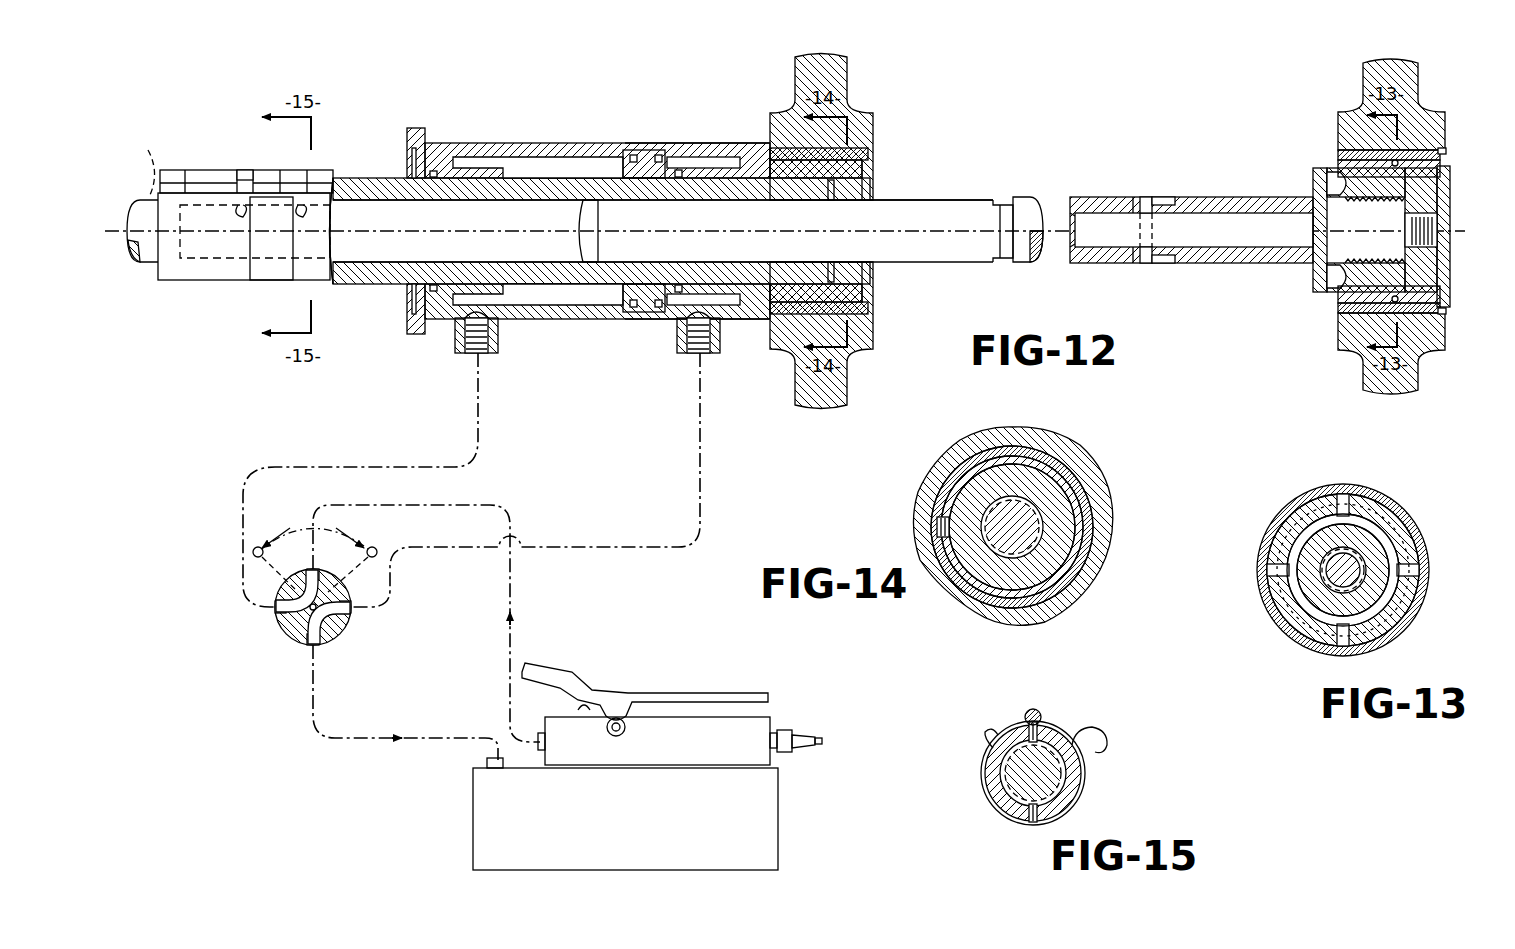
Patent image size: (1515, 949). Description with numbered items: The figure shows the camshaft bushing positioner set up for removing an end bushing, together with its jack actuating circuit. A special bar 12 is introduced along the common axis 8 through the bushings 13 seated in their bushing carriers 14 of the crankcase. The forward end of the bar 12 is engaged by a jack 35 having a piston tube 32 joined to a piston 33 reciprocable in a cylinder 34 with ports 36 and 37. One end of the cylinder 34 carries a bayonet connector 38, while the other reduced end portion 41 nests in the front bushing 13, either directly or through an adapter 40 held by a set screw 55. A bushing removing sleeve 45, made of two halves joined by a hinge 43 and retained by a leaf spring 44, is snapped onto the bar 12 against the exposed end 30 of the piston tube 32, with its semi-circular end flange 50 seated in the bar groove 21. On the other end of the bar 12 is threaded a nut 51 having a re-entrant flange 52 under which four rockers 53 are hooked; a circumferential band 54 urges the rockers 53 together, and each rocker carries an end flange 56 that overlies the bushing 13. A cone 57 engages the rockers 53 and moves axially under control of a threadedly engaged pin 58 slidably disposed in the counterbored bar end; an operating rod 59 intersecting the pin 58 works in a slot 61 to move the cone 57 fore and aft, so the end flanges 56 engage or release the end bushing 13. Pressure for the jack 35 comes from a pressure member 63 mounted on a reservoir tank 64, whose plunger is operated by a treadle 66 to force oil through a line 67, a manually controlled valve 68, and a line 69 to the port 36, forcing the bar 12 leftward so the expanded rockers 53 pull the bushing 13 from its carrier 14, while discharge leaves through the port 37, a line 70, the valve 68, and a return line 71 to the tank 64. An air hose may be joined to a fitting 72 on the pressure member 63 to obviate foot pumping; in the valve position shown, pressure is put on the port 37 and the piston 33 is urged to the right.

In FIG. 12, the common axis 8 is at (946, 222).
In FIG. 12, the bar 12 is at (918, 262).
In FIG. 14, the bar 12 is at (1050, 538).
In FIG. 13, the bar 12 is at (1310, 564).
In FIG. 15, the bar 12 is at (1010, 785).
In FIG. 12, the bushing 13 is at (868, 306).
In FIG. 14, the bushing 13 is at (1075, 473).
In FIG. 13, the bushing 13 is at (1392, 522).
In FIG. 12, the bushing carrier 14 is at (868, 124).
In FIG. 14, the bushing carrier 14 is at (1035, 442).
In FIG. 12, the bar groove 21 is at (592, 224).
In FIG. 12, the exposed end of piston tube 30 is at (334, 288).
In FIG. 12, the piston tube 32 is at (378, 186).
In FIG. 12, the piston 33 is at (652, 160).
In FIG. 12, the cylinder 34 is at (730, 143).
In FIG. 12, the jack 35 is at (472, 140).
In FIG. 12, the port 36 is at (682, 342).
In FIG. 12, the port 37 is at (498, 348).
In FIG. 12, the bayonet connector 38 is at (414, 128).
In FIG. 12, the adapter 40 is at (868, 160).
In FIG. 14, the adapter 40 is at (1083, 502).
In FIG. 12, the reduced end portion 41 is at (862, 190).
In FIG. 12, the hinge 43 is at (200, 170).
In FIG. 15, the hinge 43 is at (1036, 709).
In FIG. 12, the leaf spring 44 is at (270, 280).
In FIG. 15, the leaf spring 44 is at (1104, 752).
In FIG. 12, the bushing removing sleeve 45 is at (215, 283).
In FIG. 15, the bushing removing sleeve 45 is at (1063, 730).
In FIG. 12, the end flange 50 is at (144, 162).
In FIG. 12, the nut 51 is at (1311, 178).
In FIG. 13, the nut 51 is at (1362, 520).
In FIG. 12, the re-entrant flange 52 is at (1345, 272).
In FIG. 12, the rocker 53 is at (1342, 166).
In FIG. 13, the rocker 53 is at (1292, 530).
In FIG. 12, the circumferential band 54 is at (1440, 330).
In FIG. 13, the circumferential band 54 is at (1416, 572).
In FIG. 14, the set screw 55 is at (936, 527).
In FIG. 12, the end flange 56 is at (1447, 152).
In FIG. 12, the cone 57 is at (1438, 203).
In FIG. 12, the pin 58 is at (1240, 248).
In FIG. 13, the pin 58 is at (1320, 578).
In FIG. 12, the operating rod 59 is at (1147, 196).
In FIG. 12, the slot 61 is at (1166, 198).
In FIG. 12, the pressure member 63 is at (712, 750).
In FIG. 12, the reservoir tank 64 is at (628, 835).
In FIG. 12, the treadle 66 is at (625, 692).
In FIG. 12, the line 67 is at (518, 594).
In FIG. 12, the manually controlled valve 68 is at (358, 620).
In FIG. 12, the line 69 is at (704, 480).
In FIG. 12, the line 70 is at (480, 456).
In FIG. 12, the return line 71 is at (318, 722).
In FIG. 12, the fitting 72 is at (800, 734).